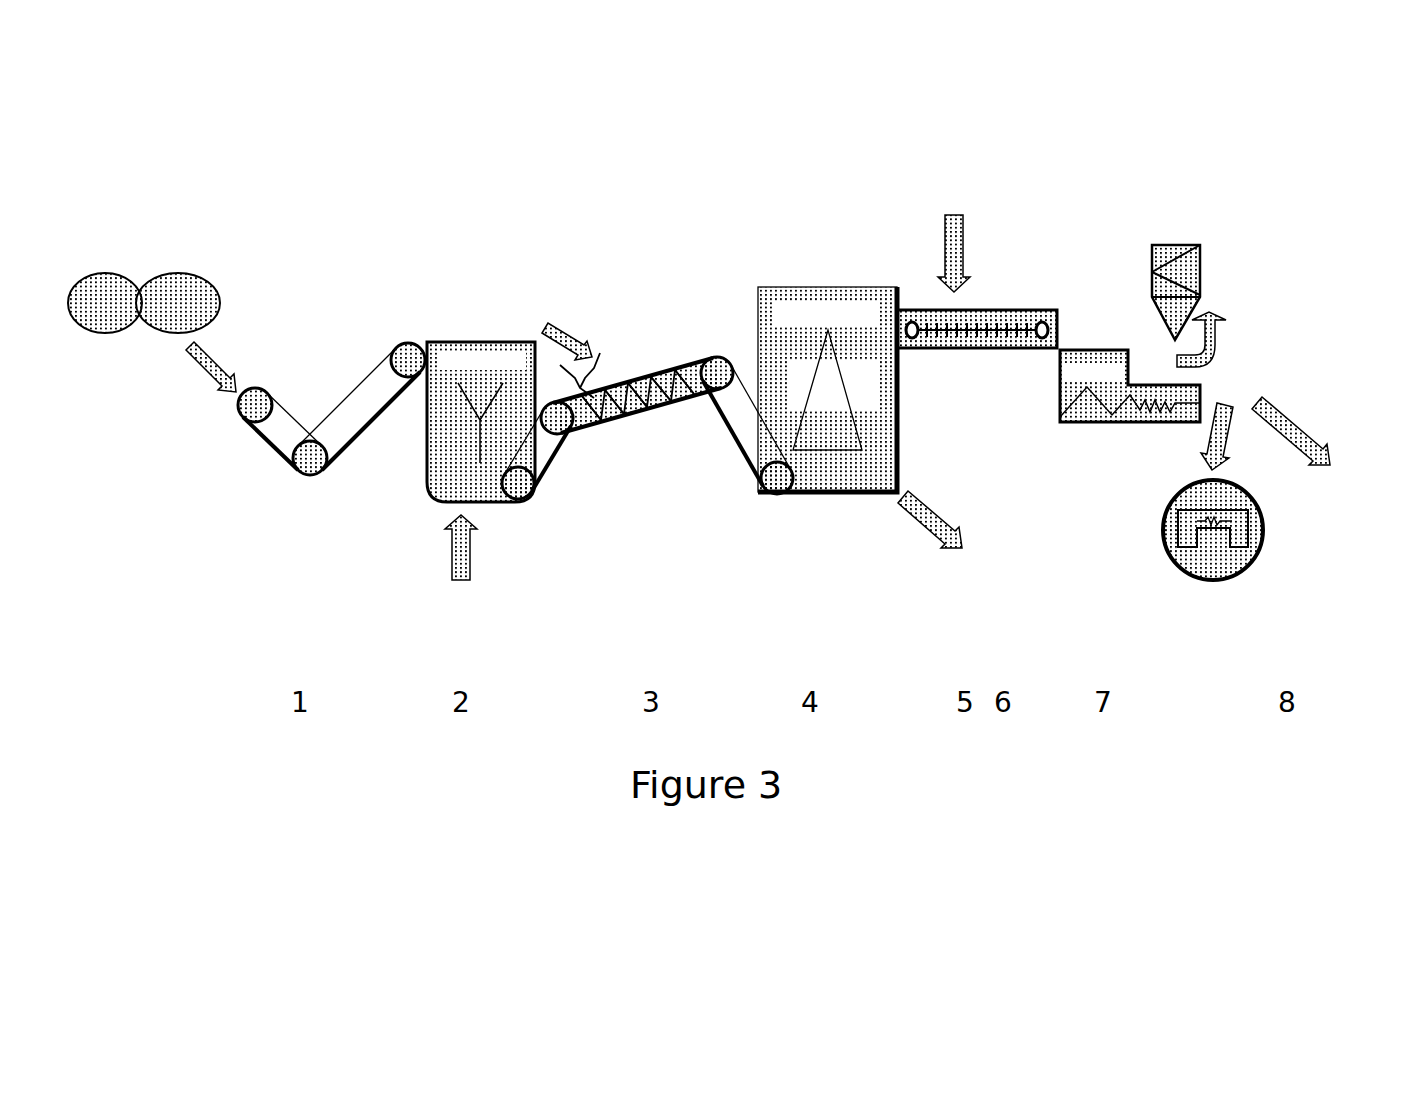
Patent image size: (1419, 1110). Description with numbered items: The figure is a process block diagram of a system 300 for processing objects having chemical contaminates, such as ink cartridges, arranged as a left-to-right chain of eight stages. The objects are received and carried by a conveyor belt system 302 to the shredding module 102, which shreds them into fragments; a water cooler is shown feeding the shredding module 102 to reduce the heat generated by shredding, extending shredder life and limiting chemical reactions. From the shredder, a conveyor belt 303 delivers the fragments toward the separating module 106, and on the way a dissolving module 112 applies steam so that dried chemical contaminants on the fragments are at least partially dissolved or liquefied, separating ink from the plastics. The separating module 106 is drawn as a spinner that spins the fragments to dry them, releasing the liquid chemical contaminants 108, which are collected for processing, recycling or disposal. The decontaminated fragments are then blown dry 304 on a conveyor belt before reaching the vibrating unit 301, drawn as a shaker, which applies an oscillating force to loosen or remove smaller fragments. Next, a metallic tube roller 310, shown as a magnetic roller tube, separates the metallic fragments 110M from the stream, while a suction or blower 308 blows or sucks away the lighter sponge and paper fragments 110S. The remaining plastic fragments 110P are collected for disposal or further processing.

The system 300 is at (328, 195).
The conveyor belt system 302 is at (298, 378).
The shredding module 102 is at (482, 333).
The dissolving module 112 is at (580, 288).
The conveyor belt 303 is at (652, 358).
The separating module 106 is at (827, 265).
The chemical contaminants 108 is at (963, 534).
The blow dry 304 is at (972, 223).
The vibrating unit 301 is at (1105, 338).
The suction or blower 308 is at (1214, 246).
The sponge and paper fragments 110S is at (1298, 312).
The metallic fragments 110M is at (1179, 440).
The plastic fragments 110P is at (1332, 451).
The metallic tube roller 310 is at (1215, 568).